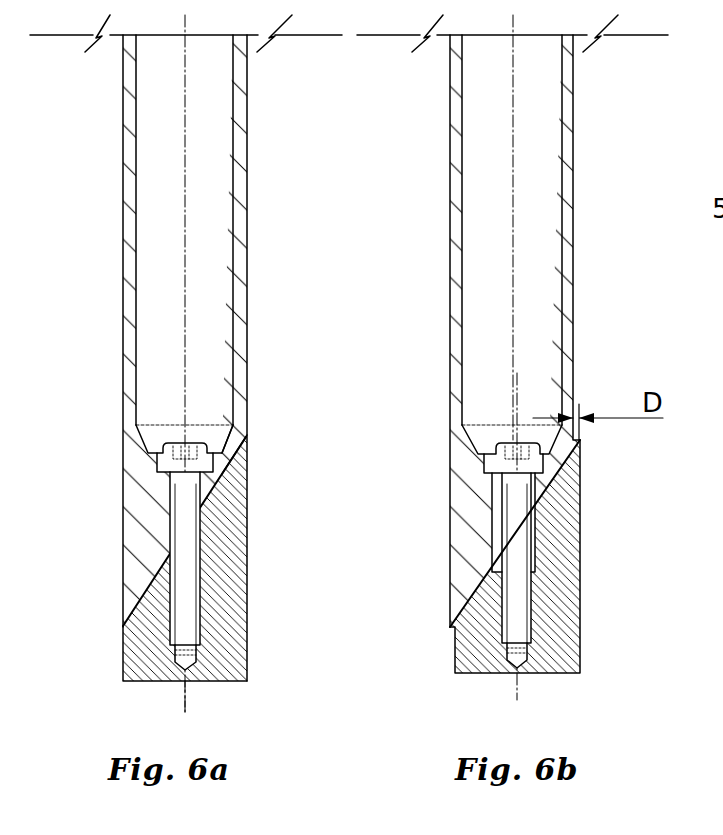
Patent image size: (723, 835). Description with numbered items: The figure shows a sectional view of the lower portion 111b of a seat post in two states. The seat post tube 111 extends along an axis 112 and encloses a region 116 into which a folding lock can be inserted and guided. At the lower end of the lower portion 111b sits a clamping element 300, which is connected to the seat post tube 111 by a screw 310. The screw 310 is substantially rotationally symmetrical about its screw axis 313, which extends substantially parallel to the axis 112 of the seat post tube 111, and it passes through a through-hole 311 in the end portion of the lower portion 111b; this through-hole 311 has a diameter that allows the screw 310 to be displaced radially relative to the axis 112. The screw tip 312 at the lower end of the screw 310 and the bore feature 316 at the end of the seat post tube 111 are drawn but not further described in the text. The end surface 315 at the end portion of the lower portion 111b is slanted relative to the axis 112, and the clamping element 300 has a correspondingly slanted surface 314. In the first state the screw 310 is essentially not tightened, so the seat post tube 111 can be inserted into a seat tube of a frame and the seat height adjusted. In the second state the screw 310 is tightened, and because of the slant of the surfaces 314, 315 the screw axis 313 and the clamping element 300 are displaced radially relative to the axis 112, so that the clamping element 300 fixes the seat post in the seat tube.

In FIG. 6a, the seat post tube 111 is at (243, 107).
In FIG. 6b, the seat post tube 111 is at (566, 107).
In FIG. 6a, the lower portion 111b is at (300, 323).
In FIG. 6b, the lower portion 111b is at (622, 323).
In FIG. 6a, the axis of the seat post tube 112 is at (183, 313).
In FIG. 6b, the axis of the seat post tube 112 is at (513, 262).
In FIG. 6a, the region 116 is at (173, 166).
In FIG. 6b, the region 116 is at (499, 166).
In FIG. 6a, the clamping element 300 is at (233, 612).
In FIG. 6b, the clamping element 300 is at (565, 612).
In FIG. 6a, the screw 310 is at (188, 485).
In FIG. 6b, the screw 310 is at (512, 487).
In FIG. 6a, the through-hole 311 is at (166, 481).
In FIG. 6b, the through-hole 311 is at (495, 481).
In FIG. 6a, the screw tip 312 is at (200, 657).
In FIG. 6b, the screw tip 312 is at (530, 656).
In FIG. 6a, the screw axis 313 is at (185, 693).
In FIG. 6b, the screw axis 313 is at (518, 410).
In FIG. 6a, the slanted surface 314 is at (232, 475).
In FIG. 6a, the end surface 315 is at (242, 435).
In FIG. 6a, the bore chamfer 316 is at (227, 437).